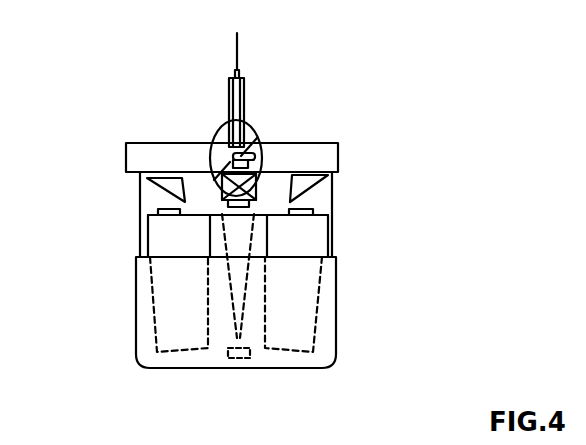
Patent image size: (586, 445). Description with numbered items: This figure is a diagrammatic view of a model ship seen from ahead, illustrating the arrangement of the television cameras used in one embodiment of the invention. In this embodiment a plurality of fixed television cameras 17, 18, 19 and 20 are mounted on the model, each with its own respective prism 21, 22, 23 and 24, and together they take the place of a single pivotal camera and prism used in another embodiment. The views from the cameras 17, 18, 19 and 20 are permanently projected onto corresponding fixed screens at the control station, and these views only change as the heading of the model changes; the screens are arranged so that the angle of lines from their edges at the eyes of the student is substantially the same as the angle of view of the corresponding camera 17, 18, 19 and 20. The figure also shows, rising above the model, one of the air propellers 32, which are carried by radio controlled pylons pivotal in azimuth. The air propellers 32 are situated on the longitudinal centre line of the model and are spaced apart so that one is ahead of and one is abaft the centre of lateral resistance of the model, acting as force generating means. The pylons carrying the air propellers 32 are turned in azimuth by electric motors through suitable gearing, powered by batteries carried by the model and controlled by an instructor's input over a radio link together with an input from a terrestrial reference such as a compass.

The television camera 17 is at (148, 238).
The television camera 18 is at (220, 239).
The television camera 19 is at (257, 238).
The television camera 20 is at (305, 248).
The prism 21 is at (172, 187).
The prism 22 is at (226, 158).
The prism 23 is at (248, 158).
The prism 24 is at (297, 189).
The air propeller 32 is at (226, 148).